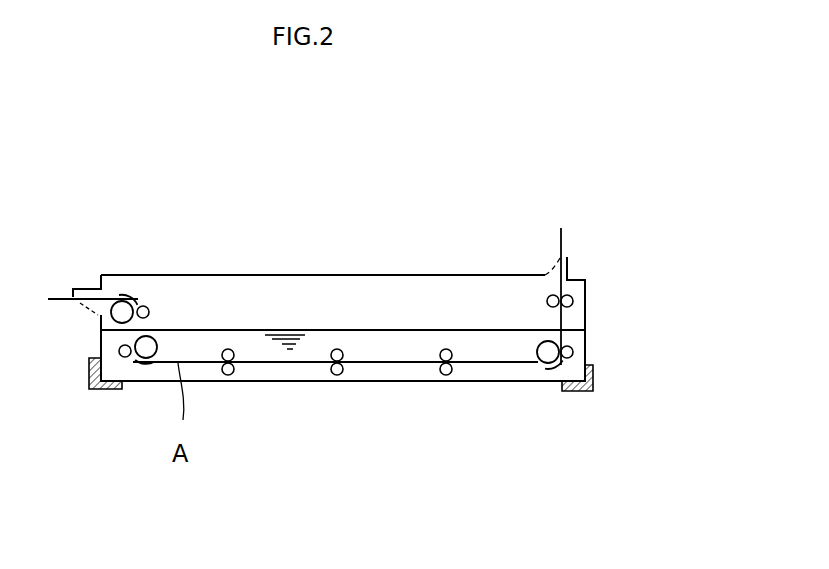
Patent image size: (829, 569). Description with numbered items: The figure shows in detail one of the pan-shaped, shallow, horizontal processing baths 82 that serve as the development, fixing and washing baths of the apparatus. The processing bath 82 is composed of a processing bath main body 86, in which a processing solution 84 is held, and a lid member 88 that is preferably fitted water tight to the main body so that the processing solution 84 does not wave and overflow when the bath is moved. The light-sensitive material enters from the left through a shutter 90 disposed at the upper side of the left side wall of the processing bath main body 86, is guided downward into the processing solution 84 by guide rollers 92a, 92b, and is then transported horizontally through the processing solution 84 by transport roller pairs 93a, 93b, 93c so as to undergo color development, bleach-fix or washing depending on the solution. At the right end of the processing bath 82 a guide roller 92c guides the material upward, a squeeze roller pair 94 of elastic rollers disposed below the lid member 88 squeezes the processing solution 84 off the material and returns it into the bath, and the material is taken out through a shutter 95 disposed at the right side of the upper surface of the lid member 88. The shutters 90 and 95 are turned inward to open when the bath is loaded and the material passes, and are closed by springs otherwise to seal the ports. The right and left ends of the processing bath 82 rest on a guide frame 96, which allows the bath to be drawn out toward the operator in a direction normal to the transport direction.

The processing bath 82 is at (405, 247).
The processing solution 84 is at (272, 351).
The processing bath main body 86 is at (313, 383).
The lid member 88 is at (268, 275).
The shutter 90 is at (83, 282).
The guide roller 92a is at (124, 308).
The guide roller 92b is at (145, 348).
The guide roller 92c is at (542, 354).
The transport roller pair 93a is at (228, 375).
The transport roller pair 93b is at (337, 375).
The transport roller pair 93c is at (446, 375).
The squeeze roller pair 94 is at (573, 298).
The shutter 95 is at (572, 262).
The guide frame 96 is at (108, 389).